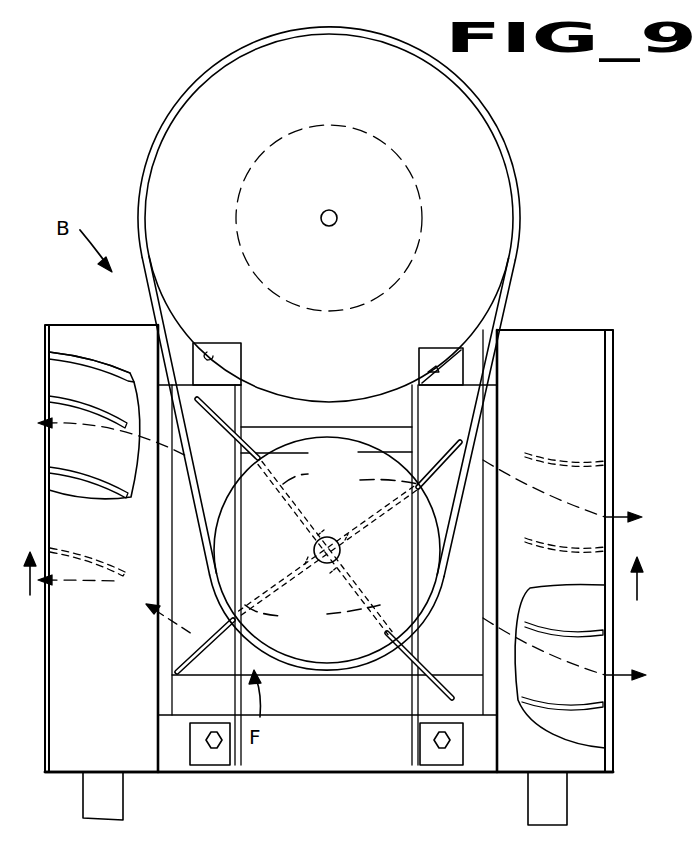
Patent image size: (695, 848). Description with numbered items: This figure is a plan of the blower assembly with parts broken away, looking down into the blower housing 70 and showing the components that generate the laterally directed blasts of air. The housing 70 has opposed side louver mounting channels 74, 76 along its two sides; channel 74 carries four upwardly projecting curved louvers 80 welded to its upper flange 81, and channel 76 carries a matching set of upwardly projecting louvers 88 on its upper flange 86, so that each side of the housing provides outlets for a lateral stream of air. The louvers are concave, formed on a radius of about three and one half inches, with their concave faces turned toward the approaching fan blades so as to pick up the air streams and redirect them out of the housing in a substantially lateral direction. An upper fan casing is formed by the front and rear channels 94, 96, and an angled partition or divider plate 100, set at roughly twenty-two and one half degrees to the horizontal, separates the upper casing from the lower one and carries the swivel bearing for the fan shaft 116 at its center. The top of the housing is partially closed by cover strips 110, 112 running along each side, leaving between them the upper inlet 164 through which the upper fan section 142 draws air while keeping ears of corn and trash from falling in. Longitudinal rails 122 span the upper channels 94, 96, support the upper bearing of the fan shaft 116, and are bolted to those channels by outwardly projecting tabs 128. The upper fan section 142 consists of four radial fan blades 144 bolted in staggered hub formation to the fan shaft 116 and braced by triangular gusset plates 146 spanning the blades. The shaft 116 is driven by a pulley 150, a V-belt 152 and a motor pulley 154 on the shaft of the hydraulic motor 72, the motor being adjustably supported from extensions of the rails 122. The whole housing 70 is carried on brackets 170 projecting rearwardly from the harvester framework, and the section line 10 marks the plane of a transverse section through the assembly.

The section line 10- 10 is at (65, 548).
The housing 70 is at (72, 318).
The hydraulic motor 72 is at (410, 163).
The side louver mounting channel 74 is at (80, 460).
The side louver mounting channel 76 is at (587, 614).
The upwardly projecting louvers 80 is at (121, 432).
The upper flange 81 is at (114, 388).
The upper flange 86 is at (605, 718).
The upwardly projecting louvers 88 is at (552, 470).
The upper fan casing channel 94 is at (350, 765).
The upper cross channel 96 is at (470, 360).
The angled partition 100 is at (302, 700).
The cover strip 110 is at (110, 750).
The cover strip 112 is at (566, 402).
The fan shaft 116 is at (313, 546).
The longitudinal rails 122 is at (326, 455).
The outwardly projecting tabs 128 is at (233, 372).
The upper fan section 142 is at (180, 662).
The radial fan blades 144 is at (329, 548).
The triangular gusset plates 146 is at (236, 432).
The pulley 150 is at (413, 565).
The V-belt 152 is at (497, 309).
The motor pulley 154 is at (348, 94).
The upper inlet 164 is at (170, 693).
The brackets 170 is at (96, 813).